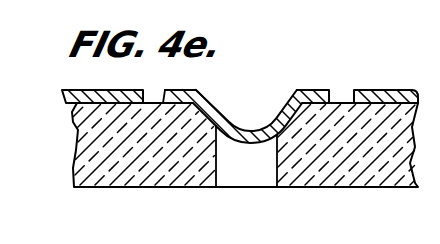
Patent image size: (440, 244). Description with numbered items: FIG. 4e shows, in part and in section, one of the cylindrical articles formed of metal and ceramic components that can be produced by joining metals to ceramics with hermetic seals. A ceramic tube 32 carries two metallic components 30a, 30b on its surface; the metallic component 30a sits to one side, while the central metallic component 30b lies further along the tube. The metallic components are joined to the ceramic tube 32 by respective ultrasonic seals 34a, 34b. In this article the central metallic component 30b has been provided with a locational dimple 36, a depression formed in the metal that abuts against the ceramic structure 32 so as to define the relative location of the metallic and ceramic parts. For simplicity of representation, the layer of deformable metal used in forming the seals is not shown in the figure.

The metallic component 30a is at (93, 90).
The central metallic component 30b is at (181, 92).
The ceramic tube 32 is at (313, 182).
The ultrasonic seal 34a is at (318, 93).
The ultrasonic seal 34b is at (373, 95).
The locational dimple 36 is at (229, 116).